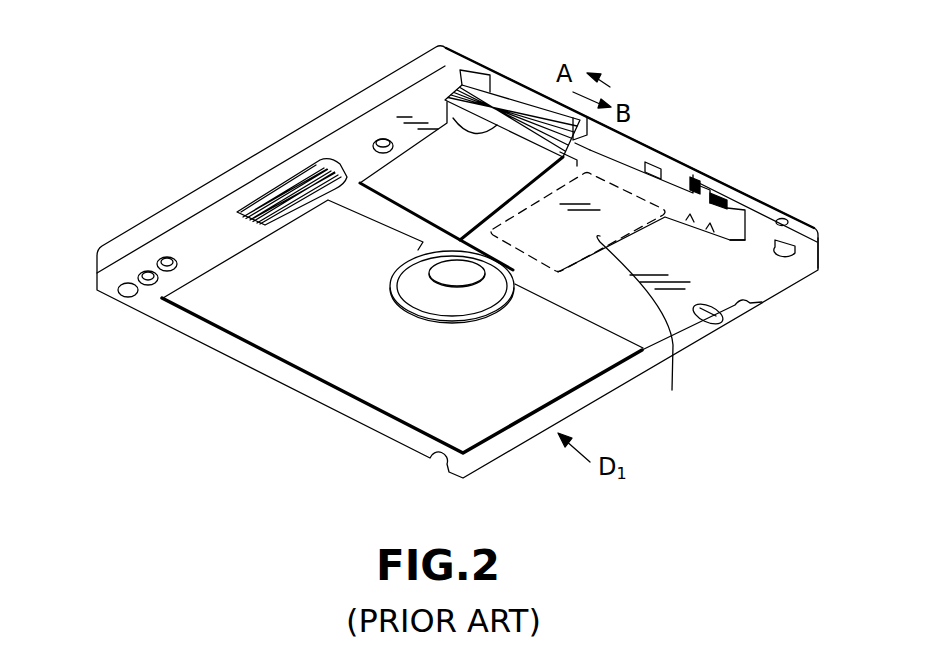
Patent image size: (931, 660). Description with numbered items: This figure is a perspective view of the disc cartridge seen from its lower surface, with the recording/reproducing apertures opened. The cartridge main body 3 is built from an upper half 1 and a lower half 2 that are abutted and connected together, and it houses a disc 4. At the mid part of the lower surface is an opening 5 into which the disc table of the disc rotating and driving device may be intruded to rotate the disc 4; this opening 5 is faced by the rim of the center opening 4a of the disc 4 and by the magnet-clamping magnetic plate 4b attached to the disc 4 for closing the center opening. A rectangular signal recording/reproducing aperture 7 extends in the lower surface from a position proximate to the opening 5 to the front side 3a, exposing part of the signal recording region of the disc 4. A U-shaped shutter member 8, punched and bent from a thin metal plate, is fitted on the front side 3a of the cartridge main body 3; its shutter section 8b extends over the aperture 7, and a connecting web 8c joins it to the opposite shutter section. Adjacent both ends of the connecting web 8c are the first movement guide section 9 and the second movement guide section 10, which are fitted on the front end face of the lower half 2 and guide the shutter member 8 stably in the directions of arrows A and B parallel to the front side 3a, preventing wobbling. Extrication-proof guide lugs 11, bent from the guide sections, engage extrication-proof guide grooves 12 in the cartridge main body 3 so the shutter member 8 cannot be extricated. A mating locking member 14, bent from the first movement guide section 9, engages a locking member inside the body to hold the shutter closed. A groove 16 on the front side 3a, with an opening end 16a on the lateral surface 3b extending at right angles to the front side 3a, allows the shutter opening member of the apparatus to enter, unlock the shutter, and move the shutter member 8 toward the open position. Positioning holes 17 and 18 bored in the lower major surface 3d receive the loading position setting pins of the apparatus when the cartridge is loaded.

The upper half 1 is at (104, 244).
The lower half 2 is at (100, 286).
The cartridge main body 3 is at (72, 197).
The front side 3a is at (765, 228).
The lateral surface 3b is at (646, 326).
The lower major surface 3d is at (352, 386).
The disc 4 is at (497, 284).
The center opening 4a is at (450, 290).
The magnet-clamping magnetic plate 4b is at (470, 276).
The opening 5 is at (412, 306).
The signal recording/reproducing aperture 7 is at (684, 352).
The shutter member 8 is at (637, 150).
The shutter section 8b is at (565, 255).
The connecting web 8c is at (678, 170).
The first movement guide section 9 is at (717, 182).
The second movement guide section 10 is at (577, 117).
The extrication-proof guide lug 11 is at (560, 152).
The extrication-proof guide groove 12 is at (437, 130).
The mating locking member 14 is at (737, 187).
The groove 16 is at (790, 218).
The opening end 16a is at (820, 243).
The positioning hole 17 is at (383, 137).
The positioning hole 18 is at (722, 323).